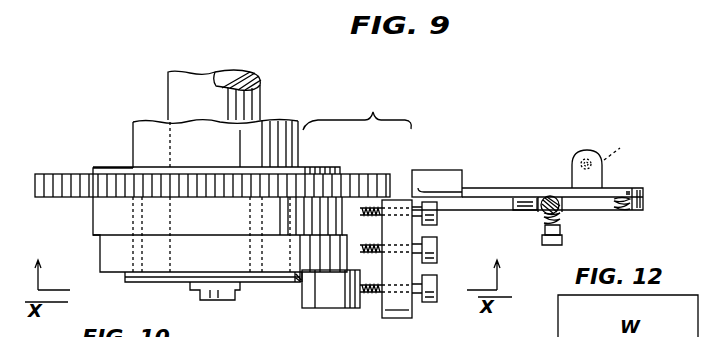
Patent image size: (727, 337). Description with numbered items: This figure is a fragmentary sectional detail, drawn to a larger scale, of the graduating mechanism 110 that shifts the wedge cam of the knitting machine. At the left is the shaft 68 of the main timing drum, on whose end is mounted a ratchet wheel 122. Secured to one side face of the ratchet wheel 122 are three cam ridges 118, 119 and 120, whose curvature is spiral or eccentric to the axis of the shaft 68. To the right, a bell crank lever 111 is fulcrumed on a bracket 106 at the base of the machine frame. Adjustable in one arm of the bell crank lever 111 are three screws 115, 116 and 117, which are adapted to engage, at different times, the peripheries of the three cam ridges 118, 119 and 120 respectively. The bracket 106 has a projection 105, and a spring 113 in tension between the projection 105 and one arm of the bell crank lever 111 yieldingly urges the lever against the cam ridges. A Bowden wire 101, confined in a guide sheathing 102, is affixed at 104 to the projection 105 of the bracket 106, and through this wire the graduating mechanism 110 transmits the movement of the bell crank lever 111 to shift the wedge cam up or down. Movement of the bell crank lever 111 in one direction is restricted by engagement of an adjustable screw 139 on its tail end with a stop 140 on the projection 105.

The shaft 68 is at (228, 97).
The graduating mechanism 110 is at (357, 109).
The ratchet wheel 122 is at (54, 182).
The cam ridge 120 is at (104, 216).
The cam ridge 119 is at (318, 250).
The cam ridge 118 is at (338, 296).
The screw 117 is at (437, 220).
The screw 116 is at (437, 258).
The screw 115 is at (430, 302).
The bracket 106 is at (437, 178).
The affixing point of guide sheathing 104 is at (540, 194).
The Bowden wire 101 is at (549, 198).
The guide sheathing 102 is at (545, 215).
The bell crank lever 111 is at (600, 204).
The spring 113 is at (626, 212).
The projection 105 is at (641, 189).
The adjustable screw 139 is at (631, 144).
The stop 140 is at (584, 150).